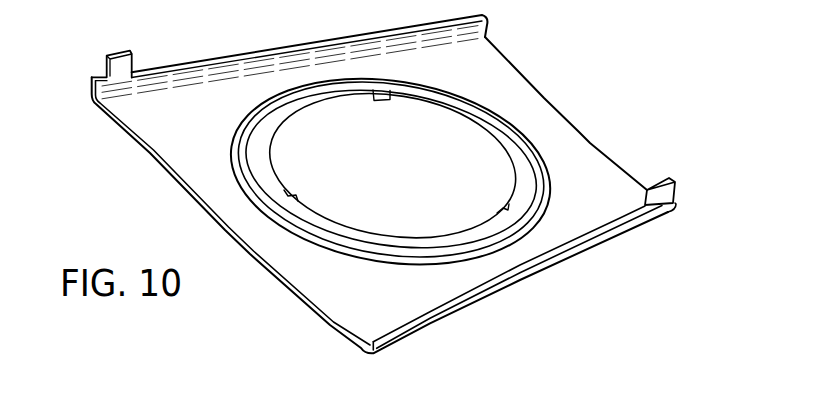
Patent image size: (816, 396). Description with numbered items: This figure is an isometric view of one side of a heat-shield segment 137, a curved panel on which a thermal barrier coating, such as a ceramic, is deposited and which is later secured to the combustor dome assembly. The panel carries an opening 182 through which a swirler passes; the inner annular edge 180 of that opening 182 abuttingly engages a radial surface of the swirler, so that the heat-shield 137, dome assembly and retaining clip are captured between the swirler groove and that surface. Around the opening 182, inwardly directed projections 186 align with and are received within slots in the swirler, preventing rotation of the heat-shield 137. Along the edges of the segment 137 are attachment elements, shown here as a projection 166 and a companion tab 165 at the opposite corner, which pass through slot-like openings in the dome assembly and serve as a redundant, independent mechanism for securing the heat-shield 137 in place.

The heat-shield segment 137 is at (196, 59).
The tab 165 is at (104, 63).
The projections 166 is at (659, 175).
The inner annular edge 180 is at (412, 238).
The opening 182 is at (433, 144).
The inwardly directed projections 186 is at (297, 193).